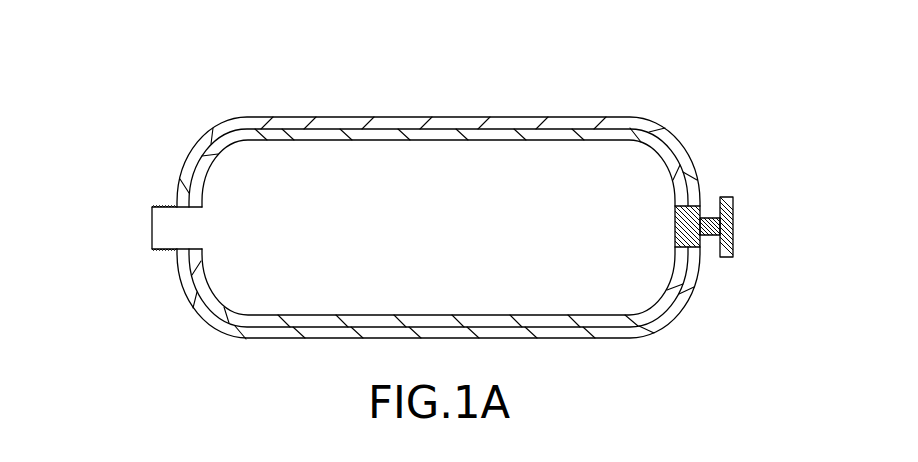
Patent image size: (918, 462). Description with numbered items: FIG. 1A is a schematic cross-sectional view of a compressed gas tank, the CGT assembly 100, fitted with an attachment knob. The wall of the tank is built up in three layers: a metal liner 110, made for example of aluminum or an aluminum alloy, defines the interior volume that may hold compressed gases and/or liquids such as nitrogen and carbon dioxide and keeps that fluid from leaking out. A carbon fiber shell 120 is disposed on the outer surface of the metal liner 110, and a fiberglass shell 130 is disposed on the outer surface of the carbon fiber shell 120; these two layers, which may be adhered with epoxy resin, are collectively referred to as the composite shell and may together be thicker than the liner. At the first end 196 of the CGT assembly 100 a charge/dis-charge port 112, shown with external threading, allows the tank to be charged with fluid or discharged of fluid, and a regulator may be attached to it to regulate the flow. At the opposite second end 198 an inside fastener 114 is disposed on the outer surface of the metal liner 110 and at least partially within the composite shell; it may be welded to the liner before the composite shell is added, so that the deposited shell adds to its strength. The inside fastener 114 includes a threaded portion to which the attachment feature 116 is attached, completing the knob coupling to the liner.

The CGT assembly 100 is at (444, 169).
The metal liner 110 is at (402, 133).
The carbon fiber shell 120 is at (357, 128).
The fiberglass shell 130 is at (543, 123).
The charge/dis-charge port 112 is at (157, 205).
The inside fastener 114 is at (685, 207).
The attachment feature 116 is at (723, 258).
The first end 196 is at (113, 228).
The second end 198 is at (776, 228).